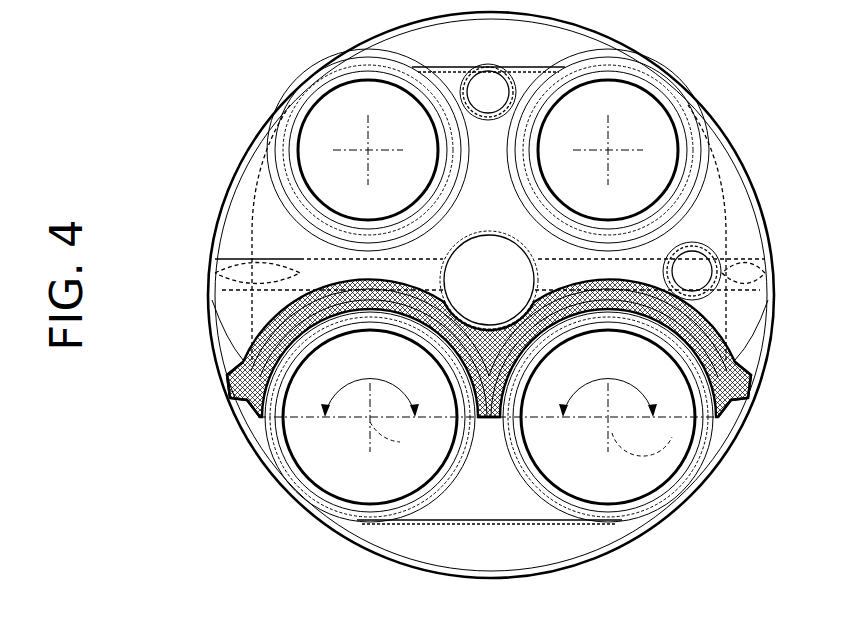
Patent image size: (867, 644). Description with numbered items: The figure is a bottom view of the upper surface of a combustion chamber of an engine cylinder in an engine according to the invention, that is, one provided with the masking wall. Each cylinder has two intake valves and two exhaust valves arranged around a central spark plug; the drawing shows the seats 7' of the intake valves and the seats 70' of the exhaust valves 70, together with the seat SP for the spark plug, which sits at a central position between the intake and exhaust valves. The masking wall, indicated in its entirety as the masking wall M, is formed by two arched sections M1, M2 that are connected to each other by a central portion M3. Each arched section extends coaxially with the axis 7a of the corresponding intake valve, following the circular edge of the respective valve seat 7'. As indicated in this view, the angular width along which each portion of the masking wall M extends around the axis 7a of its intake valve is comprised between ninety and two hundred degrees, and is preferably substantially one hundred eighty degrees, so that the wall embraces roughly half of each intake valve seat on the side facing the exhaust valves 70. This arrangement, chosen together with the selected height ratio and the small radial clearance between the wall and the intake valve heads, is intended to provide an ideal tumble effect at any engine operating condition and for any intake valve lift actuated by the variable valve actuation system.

The exhaust valve seat 70' is at (368, 136).
The exhaust valve 70 is at (610, 130).
The intake valve seat 7' is at (467, 438).
The intake valve axis 7a is at (380, 423).
The masking wall M is at (258, 320).
The first arched section of the masking wall M1 is at (293, 300).
The second arched section of the masking wall M2 is at (720, 345).
The central portion of the masking wall M3 is at (489, 420).
The spark plug seat SP is at (447, 311).